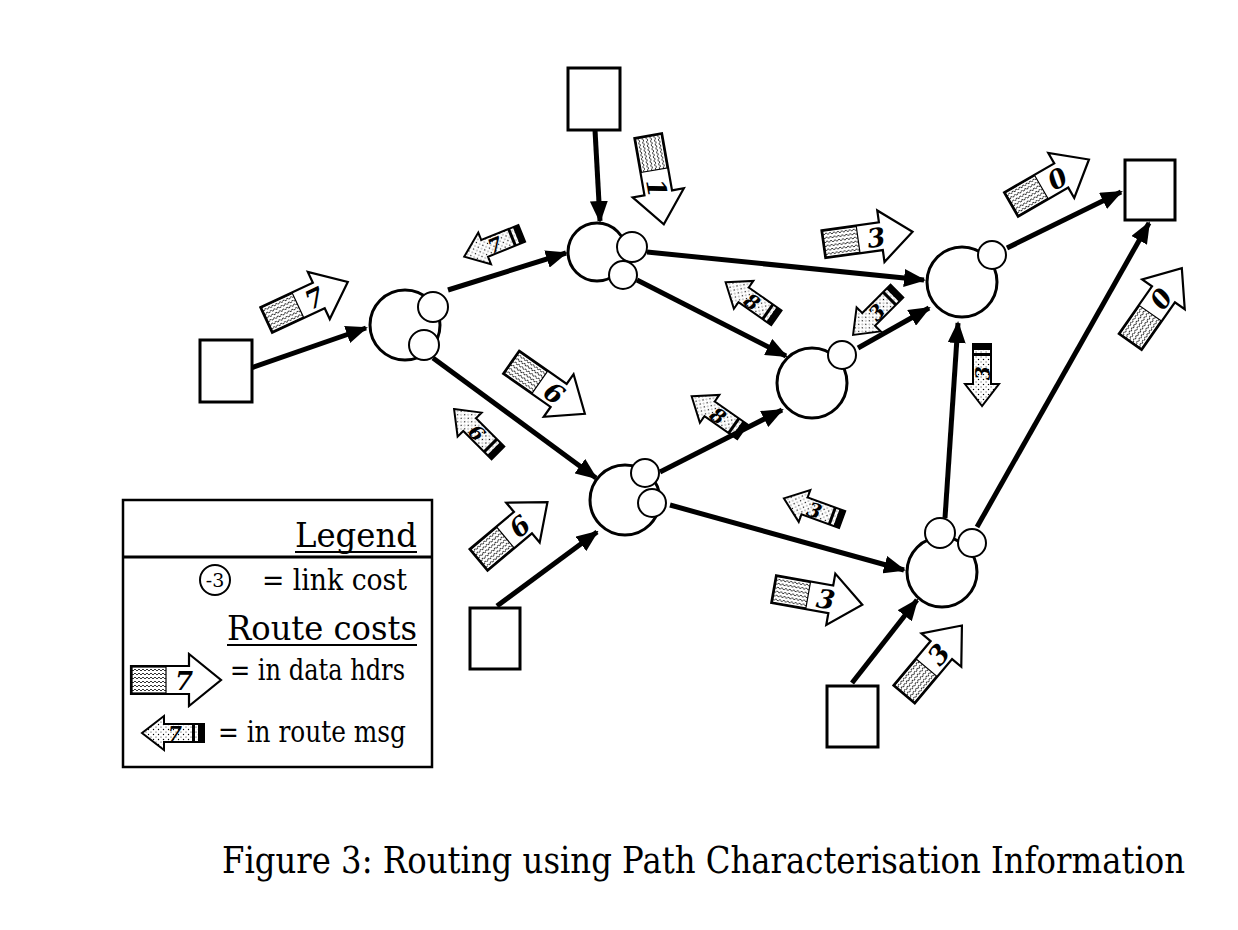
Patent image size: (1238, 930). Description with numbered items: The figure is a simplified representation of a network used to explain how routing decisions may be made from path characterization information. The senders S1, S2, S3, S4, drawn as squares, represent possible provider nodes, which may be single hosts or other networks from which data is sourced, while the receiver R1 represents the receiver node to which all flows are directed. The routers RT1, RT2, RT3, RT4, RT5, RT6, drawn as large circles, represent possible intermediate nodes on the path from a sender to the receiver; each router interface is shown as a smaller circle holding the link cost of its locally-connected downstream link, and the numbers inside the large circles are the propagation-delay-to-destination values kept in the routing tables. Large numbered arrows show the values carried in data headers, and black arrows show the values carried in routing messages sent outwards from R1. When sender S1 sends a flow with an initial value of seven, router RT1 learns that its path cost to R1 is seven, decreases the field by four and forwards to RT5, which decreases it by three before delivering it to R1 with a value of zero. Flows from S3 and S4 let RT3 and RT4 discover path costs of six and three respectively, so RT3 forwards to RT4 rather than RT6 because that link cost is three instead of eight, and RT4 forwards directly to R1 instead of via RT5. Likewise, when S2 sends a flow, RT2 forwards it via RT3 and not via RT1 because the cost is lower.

The router RT1 is at (586, 243).
The router RT2 is at (409, 311).
The router RT3 is at (628, 515).
The router RT4 is at (967, 564).
The router RT5 is at (987, 283).
The router RT6 is at (823, 396).
The sender S1 is at (594, 99).
The sender S2 is at (226, 371).
The sender S3 is at (495, 638).
The sender S4 is at (852, 716).
The receiver R1 is at (1150, 190).